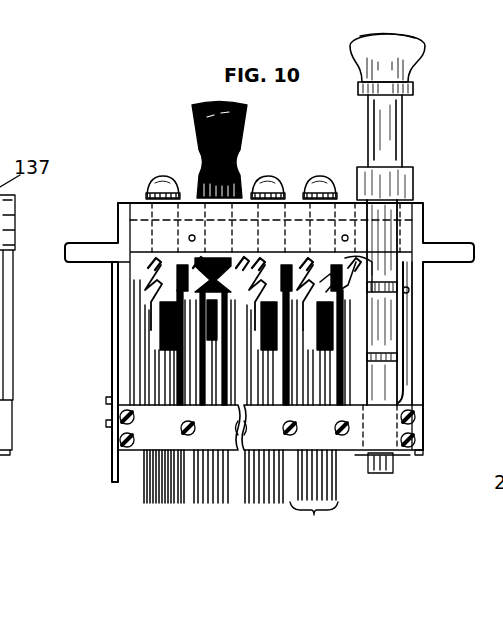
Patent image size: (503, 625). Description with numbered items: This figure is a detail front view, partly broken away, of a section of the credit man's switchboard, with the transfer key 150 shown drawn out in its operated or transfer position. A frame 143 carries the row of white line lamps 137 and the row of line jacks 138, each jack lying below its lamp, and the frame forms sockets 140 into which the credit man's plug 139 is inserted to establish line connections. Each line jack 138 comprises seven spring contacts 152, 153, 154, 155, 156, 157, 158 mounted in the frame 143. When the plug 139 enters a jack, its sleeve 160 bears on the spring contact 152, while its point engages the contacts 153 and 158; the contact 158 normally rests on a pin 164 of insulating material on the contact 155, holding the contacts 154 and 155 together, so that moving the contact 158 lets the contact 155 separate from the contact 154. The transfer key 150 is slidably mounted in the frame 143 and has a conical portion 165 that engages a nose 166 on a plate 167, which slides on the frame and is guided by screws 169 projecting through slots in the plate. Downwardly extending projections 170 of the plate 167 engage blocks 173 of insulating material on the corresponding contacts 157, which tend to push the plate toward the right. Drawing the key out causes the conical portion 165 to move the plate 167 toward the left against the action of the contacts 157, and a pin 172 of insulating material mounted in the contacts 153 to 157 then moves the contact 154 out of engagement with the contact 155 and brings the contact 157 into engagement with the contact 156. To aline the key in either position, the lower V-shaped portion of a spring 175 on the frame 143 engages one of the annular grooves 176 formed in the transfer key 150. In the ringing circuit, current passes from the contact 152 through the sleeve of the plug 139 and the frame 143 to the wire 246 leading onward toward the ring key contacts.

The socket 140 is at (148, 203).
The screw 169 is at (196, 201).
The plug 139 is at (203, 128).
The sleeve 160 is at (236, 200).
The line lamp 137 is at (278, 194).
The transfer key 150 is at (397, 76).
The conical portion 165 is at (410, 186).
The plate 167 is at (355, 262).
The nose 166 is at (380, 252).
The annular groove 176 is at (410, 289).
The frame 143 is at (415, 310).
The spring 175 is at (405, 334).
The block 173 is at (330, 284).
The projection 170 is at (150, 268).
The pin 164 is at (157, 298).
The pin 172 is at (150, 353).
The wire 246 is at (108, 487).
The spring contact 152 is at (147, 494).
The spring contact 153 is at (153, 496).
The spring contact 154 is at (159, 498).
The spring contact 155 is at (165, 500).
The spring contact 156 is at (170, 500).
The spring contact 157 is at (176, 500).
The spring contact 158 is at (183, 500).
The line jack 138 is at (266, 496).